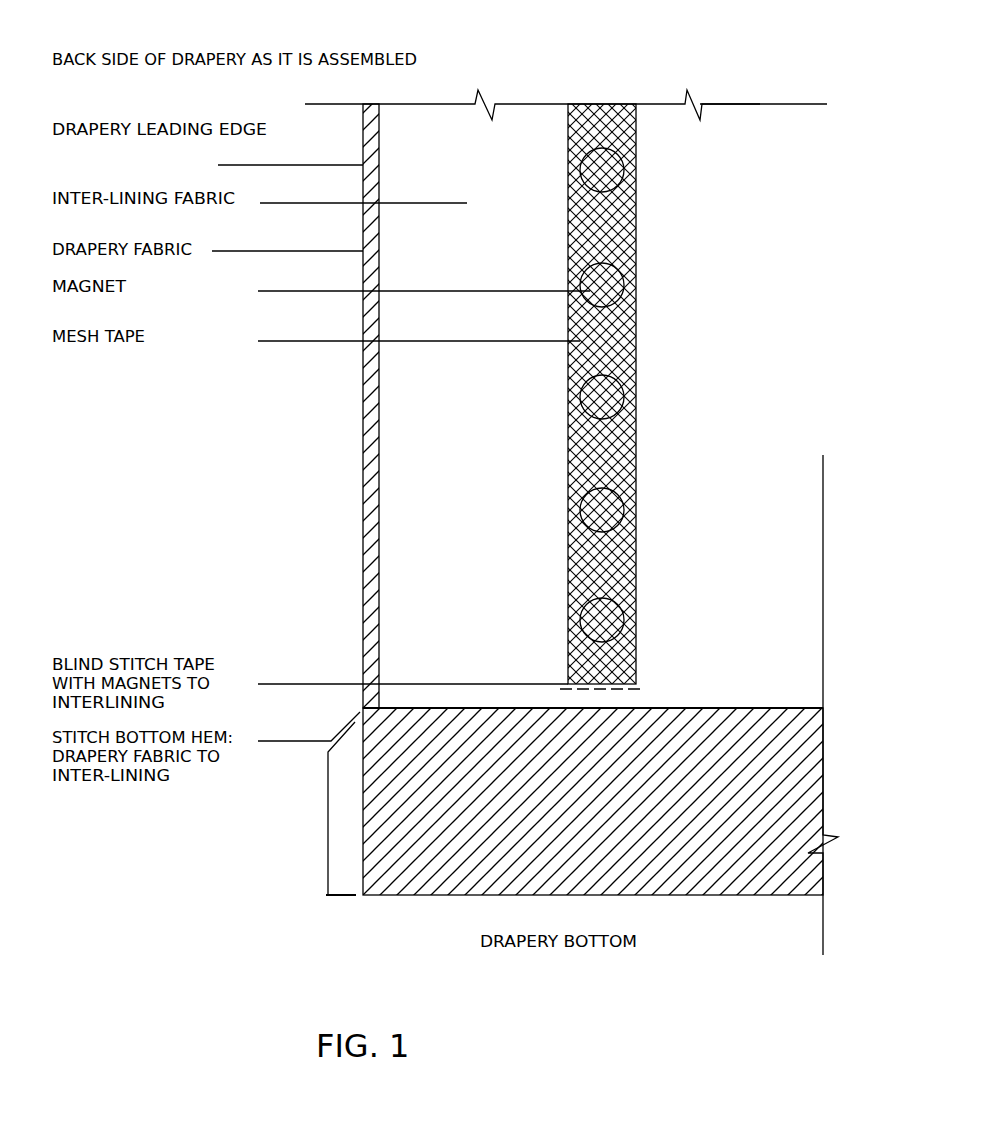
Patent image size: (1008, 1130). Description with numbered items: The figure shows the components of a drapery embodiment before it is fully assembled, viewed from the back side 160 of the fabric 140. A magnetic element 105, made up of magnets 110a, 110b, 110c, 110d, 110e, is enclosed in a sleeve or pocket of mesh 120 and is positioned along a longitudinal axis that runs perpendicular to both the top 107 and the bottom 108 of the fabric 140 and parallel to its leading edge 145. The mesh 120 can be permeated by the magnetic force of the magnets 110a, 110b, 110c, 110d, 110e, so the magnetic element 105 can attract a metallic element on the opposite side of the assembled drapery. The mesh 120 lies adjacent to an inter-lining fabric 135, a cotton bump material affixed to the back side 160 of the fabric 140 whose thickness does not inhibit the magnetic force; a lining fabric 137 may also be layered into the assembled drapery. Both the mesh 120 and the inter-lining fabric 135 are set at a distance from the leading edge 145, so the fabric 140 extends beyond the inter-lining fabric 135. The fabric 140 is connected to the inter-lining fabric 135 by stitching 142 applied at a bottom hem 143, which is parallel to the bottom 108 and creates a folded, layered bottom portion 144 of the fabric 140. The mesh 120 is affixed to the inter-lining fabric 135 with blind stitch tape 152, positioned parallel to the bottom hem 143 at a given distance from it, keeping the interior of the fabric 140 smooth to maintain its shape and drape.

The back side 160 is at (278, 21).
The top 107 is at (578, 105).
The fabric 140 is at (713, 133).
The bottom 108 is at (578, 102).
The magnetic element 105 is at (636, 215).
The magnet 110a is at (605, 170).
The magnet 110b is at (620, 283).
The magnet 110c is at (612, 400).
The magnet 110d is at (612, 510).
The magnet 110e is at (612, 620).
The leading edge 145 is at (290, 157).
The inter-lining fabric 135 is at (363, 195).
The mesh 120 is at (419, 331).
The lining fabric 137 is at (839, 705).
The bottom hem 143 is at (823, 707).
The blind stitch tape 152 is at (450, 680).
The stitching 142 is at (403, 710).
The bottom portion 144 is at (328, 797).